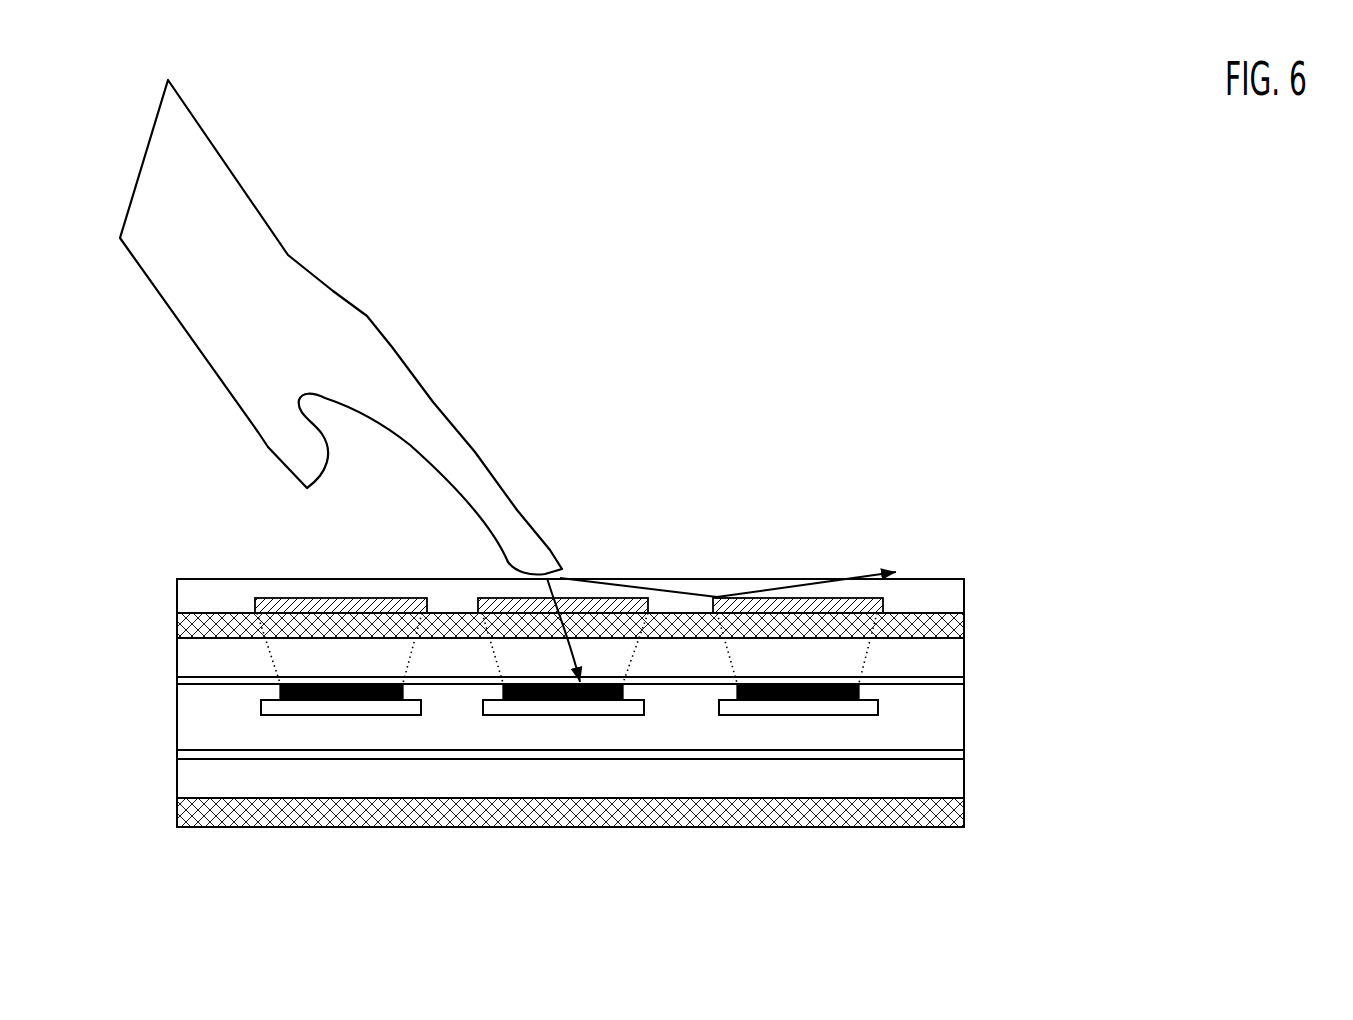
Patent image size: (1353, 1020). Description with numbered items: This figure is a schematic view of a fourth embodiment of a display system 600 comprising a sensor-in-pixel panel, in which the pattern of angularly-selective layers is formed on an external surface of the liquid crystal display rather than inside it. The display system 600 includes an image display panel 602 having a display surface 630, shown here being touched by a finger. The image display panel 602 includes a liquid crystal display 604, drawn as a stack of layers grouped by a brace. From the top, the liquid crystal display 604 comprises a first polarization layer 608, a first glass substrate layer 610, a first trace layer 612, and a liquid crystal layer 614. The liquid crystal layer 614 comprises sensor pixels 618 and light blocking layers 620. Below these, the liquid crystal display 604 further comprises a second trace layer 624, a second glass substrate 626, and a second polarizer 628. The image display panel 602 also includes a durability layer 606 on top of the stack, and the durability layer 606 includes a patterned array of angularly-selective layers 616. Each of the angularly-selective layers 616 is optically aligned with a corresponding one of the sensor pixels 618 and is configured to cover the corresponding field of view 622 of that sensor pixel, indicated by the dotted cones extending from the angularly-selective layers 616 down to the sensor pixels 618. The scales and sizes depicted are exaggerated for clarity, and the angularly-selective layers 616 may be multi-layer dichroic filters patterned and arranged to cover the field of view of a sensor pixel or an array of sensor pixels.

The display system 600 is at (967, 236).
The image display panel 602 is at (1190, 614).
The liquid crystal display 604 is at (664, 735).
The durability layer 606 is at (965, 588).
The first polarization layer 608 is at (965, 622).
The first glass substrate layer 610 is at (965, 647).
The first trace layer 612 is at (965, 680).
The liquid crystal layer 614 is at (965, 720).
The angularly-selective layers 616 is at (830, 598).
The sensor pixels 618 is at (758, 702).
The light blocking layers 620 is at (806, 705).
The field of view 622 is at (261, 654).
The second trace layer 624 is at (965, 752).
The second glass substrate 626 is at (965, 777).
The second polarizer 628 is at (624, 822).
The display surface 630 is at (606, 572).